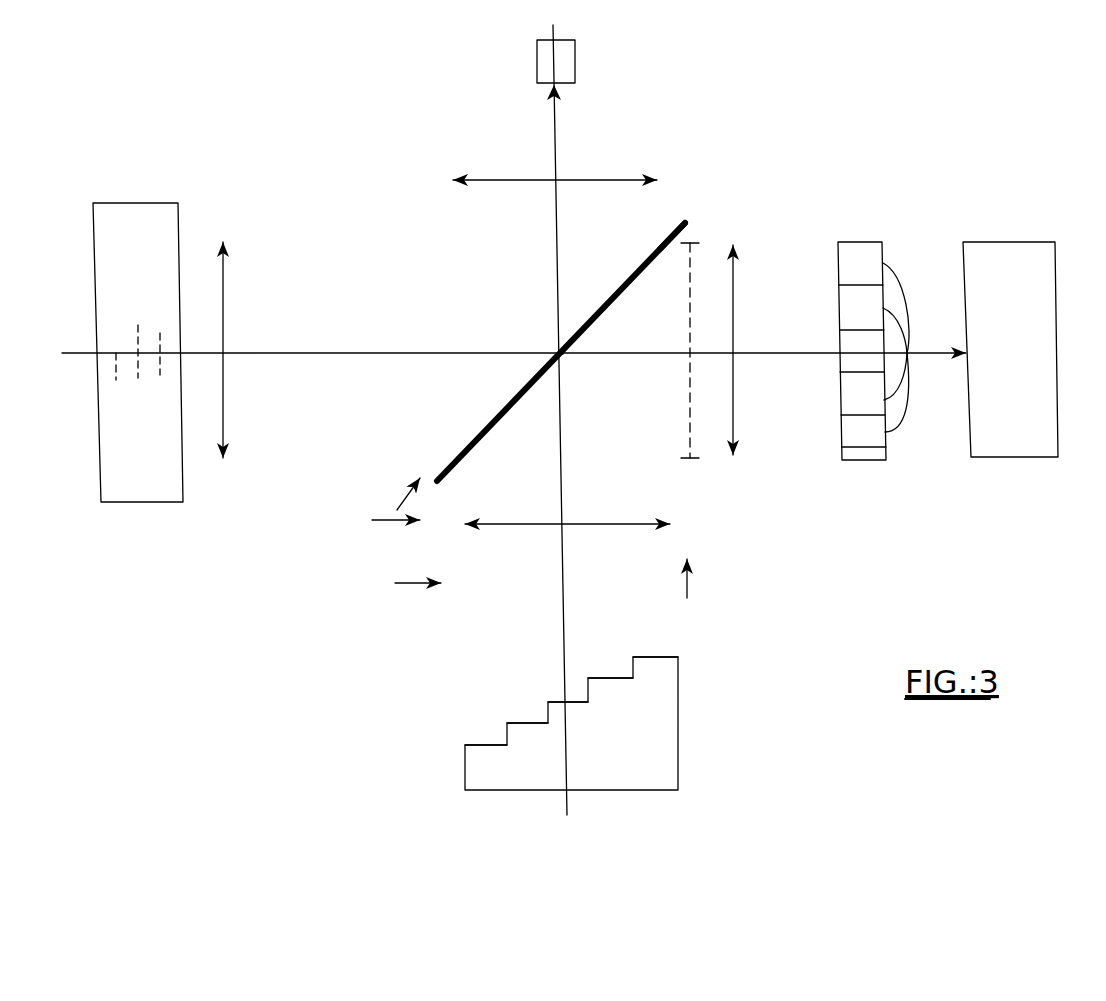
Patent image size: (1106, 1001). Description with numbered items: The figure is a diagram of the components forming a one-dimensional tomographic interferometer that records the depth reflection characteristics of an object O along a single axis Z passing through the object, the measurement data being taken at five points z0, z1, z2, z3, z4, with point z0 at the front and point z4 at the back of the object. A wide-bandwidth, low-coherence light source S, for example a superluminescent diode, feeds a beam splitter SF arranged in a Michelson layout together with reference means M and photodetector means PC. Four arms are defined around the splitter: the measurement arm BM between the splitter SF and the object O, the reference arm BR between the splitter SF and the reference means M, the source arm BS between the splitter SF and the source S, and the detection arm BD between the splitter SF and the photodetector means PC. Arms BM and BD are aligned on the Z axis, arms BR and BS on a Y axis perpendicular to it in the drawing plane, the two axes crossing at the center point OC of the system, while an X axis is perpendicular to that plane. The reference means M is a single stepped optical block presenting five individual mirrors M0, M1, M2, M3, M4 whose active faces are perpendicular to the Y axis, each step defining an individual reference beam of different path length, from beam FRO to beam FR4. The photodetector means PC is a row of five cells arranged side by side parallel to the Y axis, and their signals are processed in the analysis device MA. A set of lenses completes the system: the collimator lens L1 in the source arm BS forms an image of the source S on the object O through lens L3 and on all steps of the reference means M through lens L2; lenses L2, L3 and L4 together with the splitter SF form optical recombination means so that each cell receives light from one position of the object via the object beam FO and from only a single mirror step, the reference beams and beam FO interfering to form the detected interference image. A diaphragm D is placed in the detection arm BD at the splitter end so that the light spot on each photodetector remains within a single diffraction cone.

The light source S is at (562, 56).
The Y axis Y is at (562, 116).
The Z axis Z is at (342, 349).
The X axis X is at (563, 350).
The first lens L1 is at (618, 178).
The second lens L2 is at (625, 524).
The third lens L3 is at (223, 420).
The fourth lens L4 is at (733, 415).
The source arm BS is at (722, 169).
The beam splitter SF is at (677, 226).
The diaphragm D is at (690, 243).
The center point OC is at (566, 358).
The photodetector means PC is at (861, 236).
The detection arm BD is at (834, 469).
The analysis device MA is at (1012, 443).
The measurement arm BM is at (263, 212).
The object O is at (157, 215).
The measurement point z0 is at (182, 355).
The measurement point z1 is at (160, 353).
The measurement point z2 is at (138, 353).
The measurement point z3 is at (117, 355).
The measurement point z4 is at (98, 353).
The object beam FO is at (396, 517).
The reference arm BR is at (393, 579).
The individual reference beam FR4 is at (375, 629).
The individual reference beam FR0 FRO is at (725, 580).
The reference means M is at (726, 637).
The individual mirror M0 is at (653, 657).
The individual mirror M1 is at (603, 678).
The individual mirror M2 is at (563, 702).
The individual mirror M3 is at (520, 723).
The individual mirror M4 is at (474, 745).